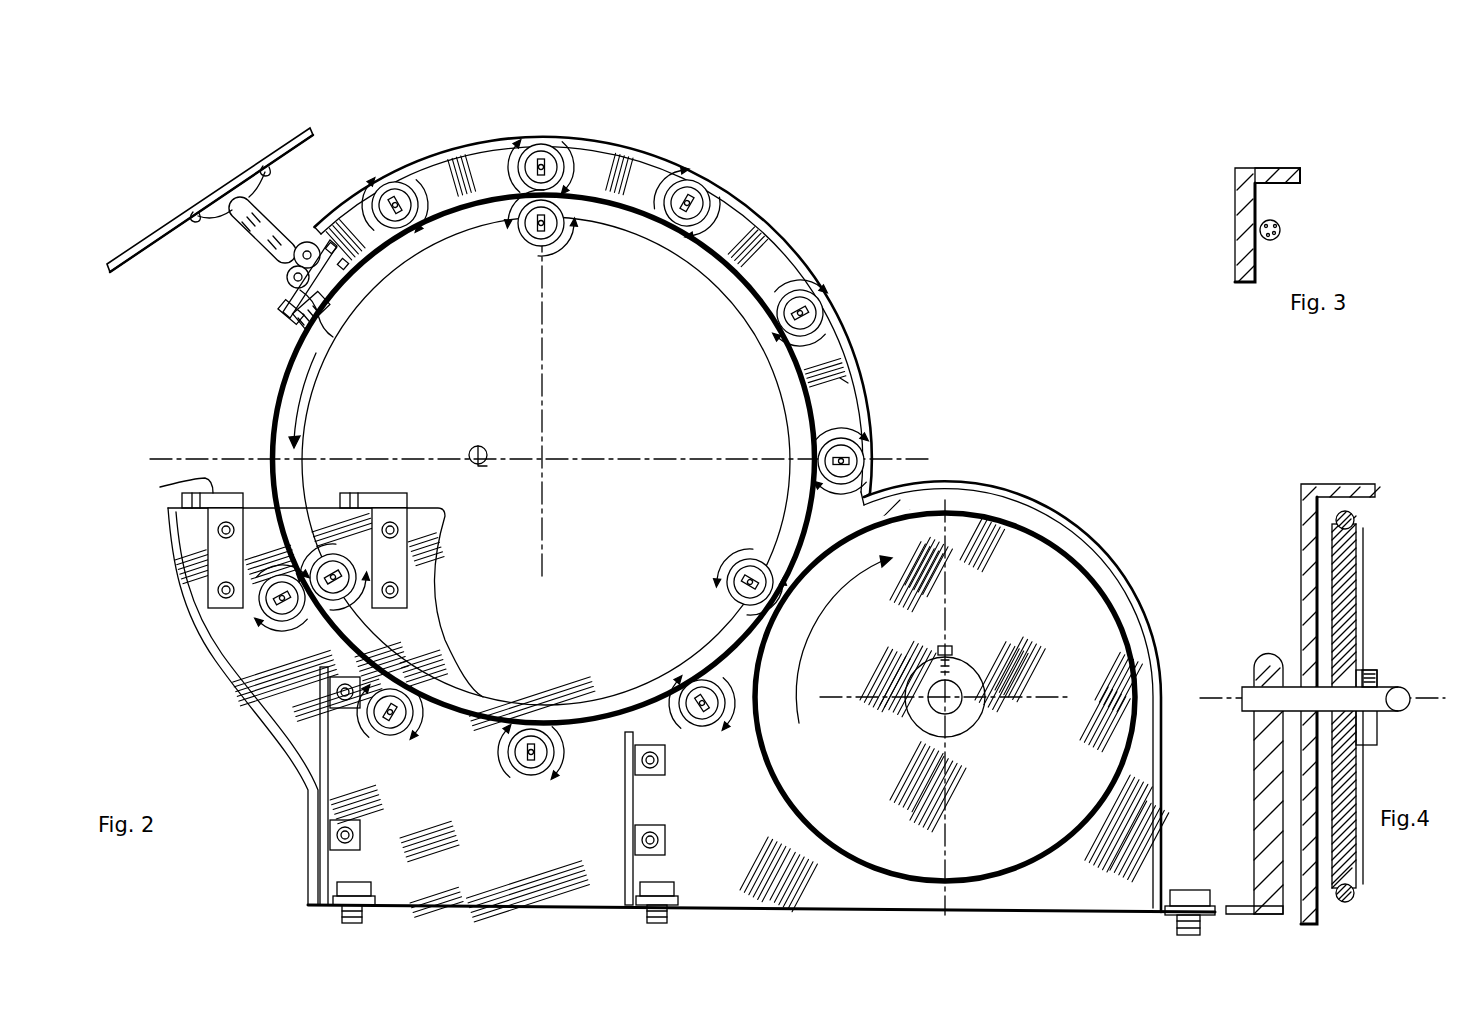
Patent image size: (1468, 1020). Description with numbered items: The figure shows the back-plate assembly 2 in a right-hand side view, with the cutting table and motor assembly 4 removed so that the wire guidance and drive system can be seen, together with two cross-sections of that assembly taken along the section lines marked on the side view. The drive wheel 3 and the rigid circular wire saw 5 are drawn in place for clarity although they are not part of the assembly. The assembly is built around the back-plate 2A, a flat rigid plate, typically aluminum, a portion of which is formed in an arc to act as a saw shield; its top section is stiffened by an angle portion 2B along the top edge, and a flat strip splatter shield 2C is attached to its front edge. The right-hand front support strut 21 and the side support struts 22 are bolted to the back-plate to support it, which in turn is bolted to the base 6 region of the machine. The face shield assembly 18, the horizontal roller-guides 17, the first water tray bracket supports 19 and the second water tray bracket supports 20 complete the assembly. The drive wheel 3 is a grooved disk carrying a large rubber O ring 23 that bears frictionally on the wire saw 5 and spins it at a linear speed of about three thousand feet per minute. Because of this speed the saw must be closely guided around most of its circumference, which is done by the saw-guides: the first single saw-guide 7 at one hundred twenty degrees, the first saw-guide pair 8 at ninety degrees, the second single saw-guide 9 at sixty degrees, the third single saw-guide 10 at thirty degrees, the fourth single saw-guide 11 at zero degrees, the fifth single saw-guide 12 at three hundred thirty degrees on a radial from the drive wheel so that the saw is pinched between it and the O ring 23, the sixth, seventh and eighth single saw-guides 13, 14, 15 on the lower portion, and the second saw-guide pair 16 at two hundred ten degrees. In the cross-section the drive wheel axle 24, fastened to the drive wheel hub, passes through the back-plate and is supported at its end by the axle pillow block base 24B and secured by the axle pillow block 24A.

In FIG. 2, the back-plate assembly 2 is at (486, 864).
In FIG. 2, the back-plate 2A is at (846, 388).
In FIG. 3, the back-plate 2A is at (1235, 203).
In FIG. 4, the back-plate 2A is at (1325, 480).
In FIG. 3, the angle portion 2B is at (1272, 170).
In FIG. 2, the flat strip splatter shield 2C is at (167, 567).
In FIG. 2, the drive wheel 3 is at (1075, 608).
In FIG. 4, the drive wheel 3 is at (1363, 603).
In FIG. 2, the motor assembly 4 is at (918, 435).
In FIG. 2, the rigid circular wire saw 5 is at (284, 383).
In FIG. 3, the rigid circular wire saw 5 is at (1283, 232).
In FIG. 2, the base 6 is at (663, 123).
In FIG. 2, the 1st single saw-guide 7 is at (385, 183).
In FIG. 2, the 1st saw-guide pair 8 is at (563, 142).
In FIG. 2, the 2nd single saw-guide 9 is at (707, 192).
In FIG. 2, the 3rd single saw-guide 10 is at (817, 307).
In FIG. 2, the 4th single saw-guide 11 is at (862, 450).
In FIG. 2, the 5th single saw-guide 12 is at (742, 560).
In FIG. 2, the 6th single saw-guide 13 is at (708, 726).
In FIG. 2, the 7th single saw-guide 14 is at (536, 776).
In FIG. 2, the 8th single saw-guide 15 is at (388, 736).
In FIG. 2, the 2nd saw-guide pair 16 is at (335, 555).
In FIG. 2, the horizontal roller-guide 17 is at (287, 308).
In FIG. 2, the face shield assembly 18 is at (242, 235).
In FIG. 2, the first water tray bracket support 19 is at (377, 493).
In FIG. 2, the second water tray bracket support 20 is at (169, 489).
In FIG. 2, the right-hand front support strut 21 is at (318, 722).
In FIG. 2, the side support strut 22 is at (633, 798).
In FIG. 2, the O ring 23 is at (1023, 520).
In FIG. 4, the O ring 23 is at (1352, 516).
In FIG. 4, the drive wheel axle 24 is at (1385, 690).
In FIG. 4, the axle pillow block 24A is at (1258, 652).
In FIG. 4, the axle pillow block base 24B is at (1250, 818).